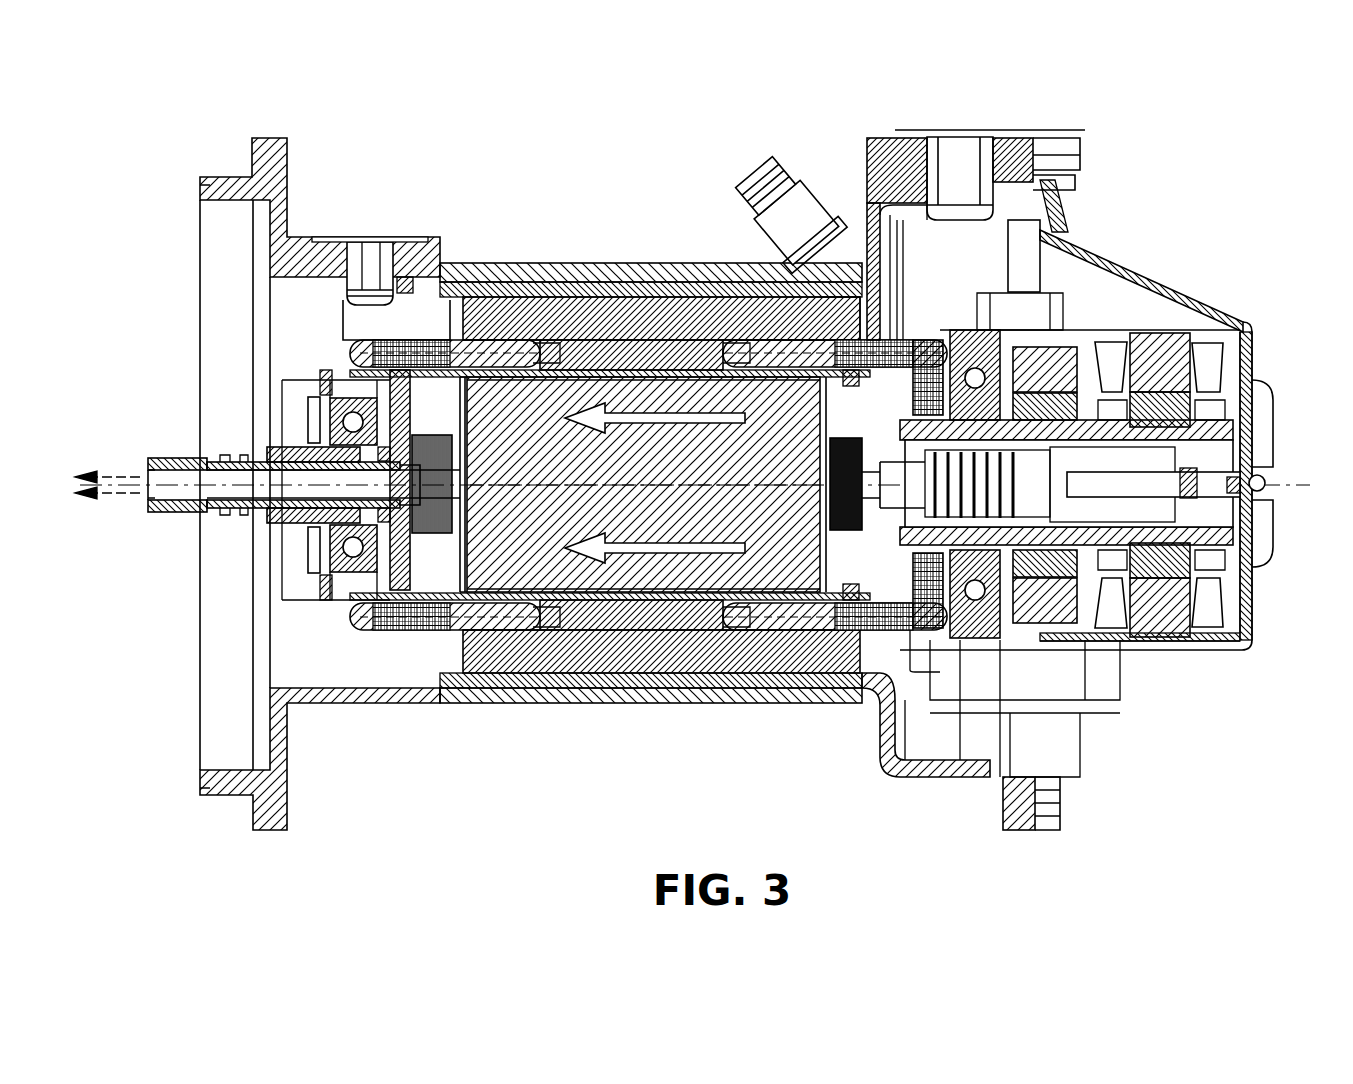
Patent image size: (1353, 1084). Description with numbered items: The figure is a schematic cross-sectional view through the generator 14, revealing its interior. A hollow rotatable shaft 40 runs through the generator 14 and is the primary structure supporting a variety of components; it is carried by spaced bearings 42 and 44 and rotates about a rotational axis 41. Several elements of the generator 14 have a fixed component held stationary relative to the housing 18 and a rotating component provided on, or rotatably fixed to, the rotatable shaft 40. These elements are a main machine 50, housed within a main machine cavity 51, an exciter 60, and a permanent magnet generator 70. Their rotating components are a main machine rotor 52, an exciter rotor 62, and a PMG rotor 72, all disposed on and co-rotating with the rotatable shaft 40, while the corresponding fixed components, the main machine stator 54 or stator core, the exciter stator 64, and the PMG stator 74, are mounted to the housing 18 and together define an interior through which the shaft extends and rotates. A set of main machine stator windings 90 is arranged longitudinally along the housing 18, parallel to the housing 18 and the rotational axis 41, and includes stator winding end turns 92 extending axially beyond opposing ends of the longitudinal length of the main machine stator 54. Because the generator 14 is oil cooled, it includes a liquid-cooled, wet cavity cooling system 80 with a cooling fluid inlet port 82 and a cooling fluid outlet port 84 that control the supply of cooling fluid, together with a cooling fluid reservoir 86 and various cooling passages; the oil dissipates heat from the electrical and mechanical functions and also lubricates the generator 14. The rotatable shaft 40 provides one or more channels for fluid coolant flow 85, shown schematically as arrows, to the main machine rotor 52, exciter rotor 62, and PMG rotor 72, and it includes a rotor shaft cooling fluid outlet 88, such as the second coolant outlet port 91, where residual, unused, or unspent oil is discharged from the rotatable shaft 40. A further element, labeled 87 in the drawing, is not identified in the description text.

The generator 14 is at (478, 145).
The housing 18 is at (495, 272).
The rotatable shaft 40 is at (230, 525).
The rotational axis 41 is at (1272, 497).
The bearing 42 is at (353, 548).
The bearing 44 is at (968, 598).
The main machine 50 is at (570, 212).
The main machine cavity 51 is at (413, 320).
The main machine rotor 52 is at (500, 578).
The main machine stator 54 is at (570, 652).
The exciter 60 is at (1165, 312).
The exciter rotor 62 is at (1185, 560).
The exciter stator 64 is at (1165, 627).
The permanent magnet generator 70 is at (1075, 325).
The PMG rotor 72 is at (1055, 600).
The PMG stator 74 is at (1070, 640).
The cooling system 80 is at (430, 320).
The cooling fluid inlet port 82 is at (372, 255).
The cooling fluid outlet port 84 is at (745, 170).
The fluid coolant flow 85 is at (605, 545).
The cooling fluid reservoir 86 is at (926, 724).
The end block 87 is at (850, 375).
The rotor shaft cooling fluid outlet 88 is at (143, 470).
The main machine stator windings 90 is at (742, 358).
The second coolant outlet port 91 is at (140, 458).
The stator winding end turns 92 is at (858, 325).